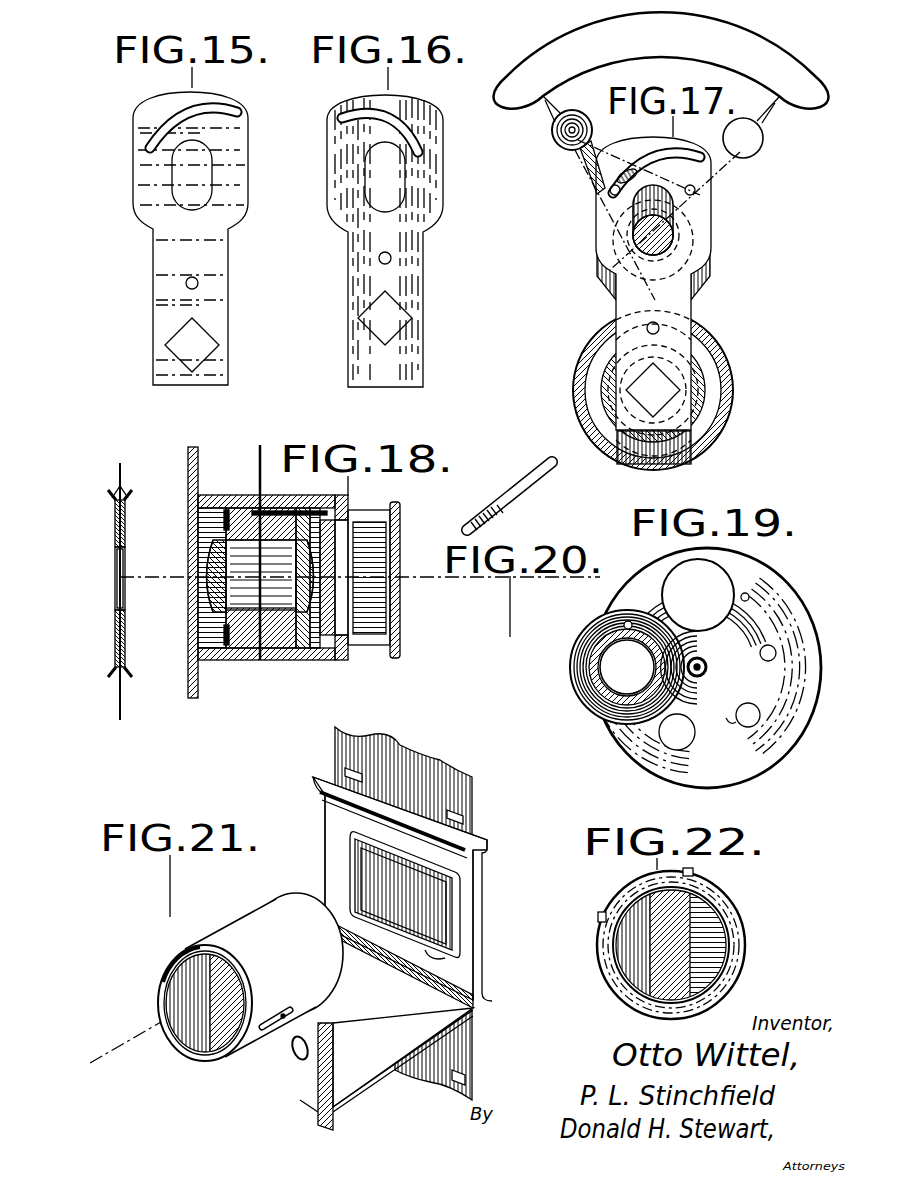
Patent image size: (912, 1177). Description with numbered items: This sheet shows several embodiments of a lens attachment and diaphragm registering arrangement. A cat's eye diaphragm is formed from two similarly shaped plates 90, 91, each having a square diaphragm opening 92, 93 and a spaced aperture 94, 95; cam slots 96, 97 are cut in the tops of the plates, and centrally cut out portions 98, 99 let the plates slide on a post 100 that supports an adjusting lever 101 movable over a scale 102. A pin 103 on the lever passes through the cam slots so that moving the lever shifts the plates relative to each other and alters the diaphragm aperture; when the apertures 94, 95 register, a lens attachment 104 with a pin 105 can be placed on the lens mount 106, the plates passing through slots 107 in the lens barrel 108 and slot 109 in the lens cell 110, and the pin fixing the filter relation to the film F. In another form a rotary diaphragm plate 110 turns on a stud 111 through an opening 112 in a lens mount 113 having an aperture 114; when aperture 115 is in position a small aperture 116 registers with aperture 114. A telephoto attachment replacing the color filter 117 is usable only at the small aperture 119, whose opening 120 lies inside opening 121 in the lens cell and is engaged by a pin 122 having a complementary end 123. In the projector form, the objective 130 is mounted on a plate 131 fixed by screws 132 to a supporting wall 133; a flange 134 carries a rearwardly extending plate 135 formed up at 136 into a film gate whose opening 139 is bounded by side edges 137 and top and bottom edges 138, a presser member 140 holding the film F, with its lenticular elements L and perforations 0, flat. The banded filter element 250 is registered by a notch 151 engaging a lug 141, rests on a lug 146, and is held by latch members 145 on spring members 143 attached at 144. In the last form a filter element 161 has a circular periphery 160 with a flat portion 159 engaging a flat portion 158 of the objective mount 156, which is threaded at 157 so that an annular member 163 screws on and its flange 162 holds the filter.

In FIG. 15, the diaphragm plate 90 is at (190, 238).
In FIG. 17, the diaphragm plate 90 is at (700, 292).
In FIG. 18, the diaphragm plate 90 is at (263, 447).
In FIG. 16, the diaphragm plate 91 is at (368, 246).
In FIG. 17, the diaphragm plate 91 is at (675, 336).
In FIG. 18, the diaphragm plate 91 is at (258, 457).
In FIG. 15, the square diaphragm opening 92 is at (210, 334).
In FIG. 17, the square diaphragm opening 92 is at (672, 398).
In FIG. 16, the square diaphragm opening 93 is at (398, 318).
In FIG. 17, the square diaphragm opening 93 is at (680, 389).
In FIG. 15, the aperture 94 is at (186, 280).
In FIG. 17, the aperture 94 is at (660, 329).
In FIG. 18, the aperture 94 is at (262, 500).
In FIG. 16, the aperture 95 is at (392, 258).
In FIG. 17, the aperture 95 is at (656, 334).
In FIG. 18, the aperture 95 is at (227, 531).
In FIG. 15, the cam slot 96 is at (218, 107).
In FIG. 17, the cam slot 96 is at (682, 160).
In FIG. 16, the cam slot 97 is at (407, 117).
In FIG. 17, the cam slot 97 is at (700, 213).
In FIG. 15, the centrally cut out portion 98 is at (213, 172).
In FIG. 17, the centrally cut out portion 98 is at (633, 210).
In FIG. 16, the centrally cut out portion 99 is at (385, 177).
In FIG. 17, the centrally cut out portion 99 is at (633, 251).
In FIG. 17, the post 100 is at (673, 241).
In FIG. 17, the adjusting lever 101 is at (586, 170).
In FIG. 17, the scale 102 is at (645, 55).
In FIG. 17, the pin 103 is at (610, 190).
In FIG. 18, the lens attachment 104 is at (380, 591).
In FIG. 18, the pin 105 is at (325, 497).
In FIG. 18, the lens mount 106 is at (306, 655).
In FIG. 17, the slots 107 is at (612, 322).
In FIG. 18, the slots 107 is at (258, 498).
In FIG. 17, the lens barrel 108 is at (586, 356).
In FIG. 18, the lens barrel 108 is at (198, 497).
In FIG. 17, the slot 109 is at (604, 390).
In FIG. 18, the slot 109 is at (235, 656).
In FIG. 17, the lens cell 110 is at (606, 410).
In FIG. 18, the lens cell 110 is at (225, 610).
In FIG. 19, the lens cell 110 is at (641, 581).
In FIG. 19, the stud 111 is at (703, 675).
In FIG. 19, the opening 112 is at (592, 711).
In FIG. 19, the lens mount 113 is at (596, 661).
In FIG. 19, the aperture 114 is at (625, 623).
In FIG. 19, the aperture 115 is at (698, 595).
In FIG. 19, the small aperture 116 is at (752, 596).
In FIG. 18, the color filter 117 is at (360, 573).
In FIG. 19, the aperture 119 is at (760, 727).
In FIG. 19, the opening 120 is at (713, 712).
In FIG. 19, the opening 121 is at (620, 705).
In FIG. 20, the pin 122 is at (527, 488).
In FIG. 20, the end 123 is at (485, 517).
In FIG. 21, the objective 130 is at (242, 920).
In FIG. 21, the plate 131 is at (292, 1050).
In FIG. 21, the screws 132 is at (298, 1061).
In FIG. 21, the supporting wall 133 is at (318, 1108).
In FIG. 21, the flange 134 is at (333, 1029).
In FIG. 21, the plate 135 is at (400, 1016).
In FIG. 21, the film gate 136 is at (455, 871).
In FIG. 21, the side edges 137 is at (358, 872).
In FIG. 21, the top and bottom edges 138 is at (350, 835).
In FIG. 21, the opening 139 is at (370, 853).
In FIG. 21, the presser member 140 is at (484, 986).
In FIG. 21, the lug 141 is at (190, 938).
In FIG. 21, the spring members 143 is at (270, 1017).
In FIG. 21, the attachment point 144 is at (290, 1014).
In FIG. 21, the latch members 145 is at (163, 988).
In FIG. 21, the lug 146 is at (205, 1052).
In FIG. 21, the notch 151 is at (232, 962).
In FIG. 21, the filter element 250 is at (206, 995).
In FIG. 22, the objective mount 156 is at (665, 881).
In FIG. 22, the thread 157 is at (692, 871).
In FIG. 22, the flat portion 158 is at (700, 908).
In FIG. 22, the flat portion 159 is at (655, 891).
In FIG. 22, the periphery 160 is at (605, 918).
In FIG. 22, the filter element 161 is at (675, 951).
In FIG. 22, the flange 162 is at (728, 969).
In FIG. 22, the annular member 163 is at (625, 999).
In FIG. 18, the film F is at (115, 562).
In FIG. 21, the film F is at (405, 762).
In FIG. 21, the lenticular elements L is at (455, 795).
In FIG. 21, the perforations 0 is at (464, 818).